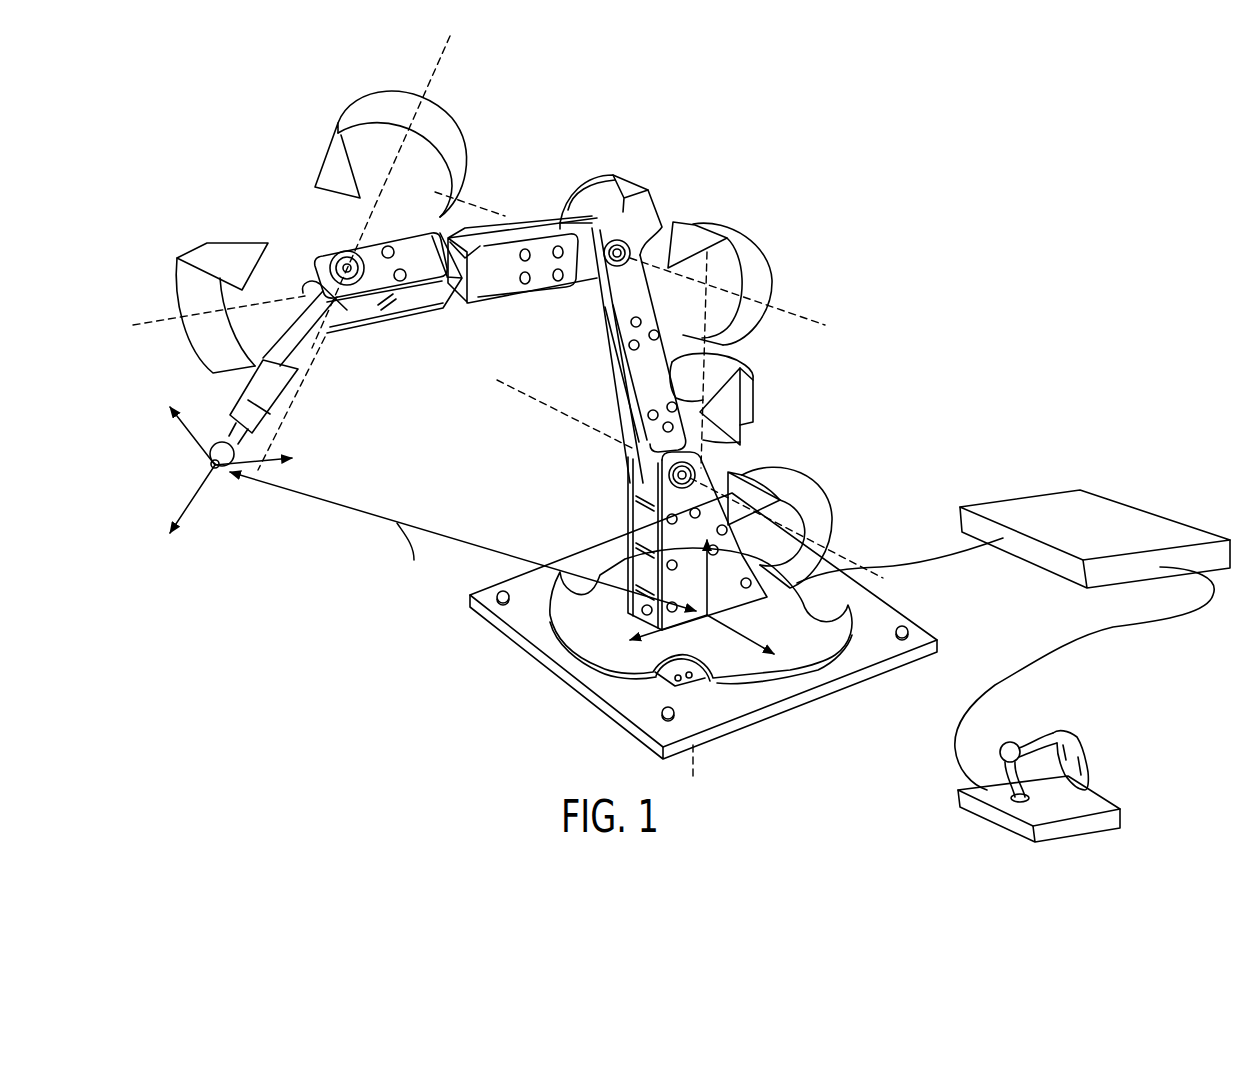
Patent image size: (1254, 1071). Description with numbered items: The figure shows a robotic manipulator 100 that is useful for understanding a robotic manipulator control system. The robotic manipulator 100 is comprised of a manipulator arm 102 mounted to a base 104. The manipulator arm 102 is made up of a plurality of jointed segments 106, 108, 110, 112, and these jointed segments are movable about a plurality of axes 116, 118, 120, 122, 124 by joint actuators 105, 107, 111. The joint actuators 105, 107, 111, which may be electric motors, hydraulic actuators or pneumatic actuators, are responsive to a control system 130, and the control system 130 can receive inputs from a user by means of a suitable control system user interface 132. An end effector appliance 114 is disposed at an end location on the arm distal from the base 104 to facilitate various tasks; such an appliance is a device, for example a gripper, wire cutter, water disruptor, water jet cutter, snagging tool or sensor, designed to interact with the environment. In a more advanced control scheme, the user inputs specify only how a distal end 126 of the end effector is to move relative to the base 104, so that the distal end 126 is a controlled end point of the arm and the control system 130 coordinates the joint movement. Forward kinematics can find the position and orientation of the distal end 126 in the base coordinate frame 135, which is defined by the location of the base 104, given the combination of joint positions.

The robotic manipulator 100 is at (980, 224).
The manipulator arm 102 is at (628, 153).
The base 104 is at (727, 590).
The joint actuator 105 is at (676, 471).
The jointed segment 106 is at (647, 205).
The joint actuator 107 is at (616, 260).
The jointed segment 108 is at (504, 285).
The jointed segment 110 is at (428, 303).
The joint actuator 111 is at (345, 262).
The jointed segment 112 is at (300, 363).
The end effector appliance 114 is at (227, 420).
The axis 116 is at (817, 568).
The axis 118 is at (705, 440).
The axis 120 is at (780, 310).
The axis 122 is at (448, 45).
The axis 124 is at (162, 322).
The distal end 126 is at (212, 467).
The control system 130 is at (1033, 507).
The control system user interface 132 is at (1120, 818).
The base coordinate frame 135 is at (708, 620).